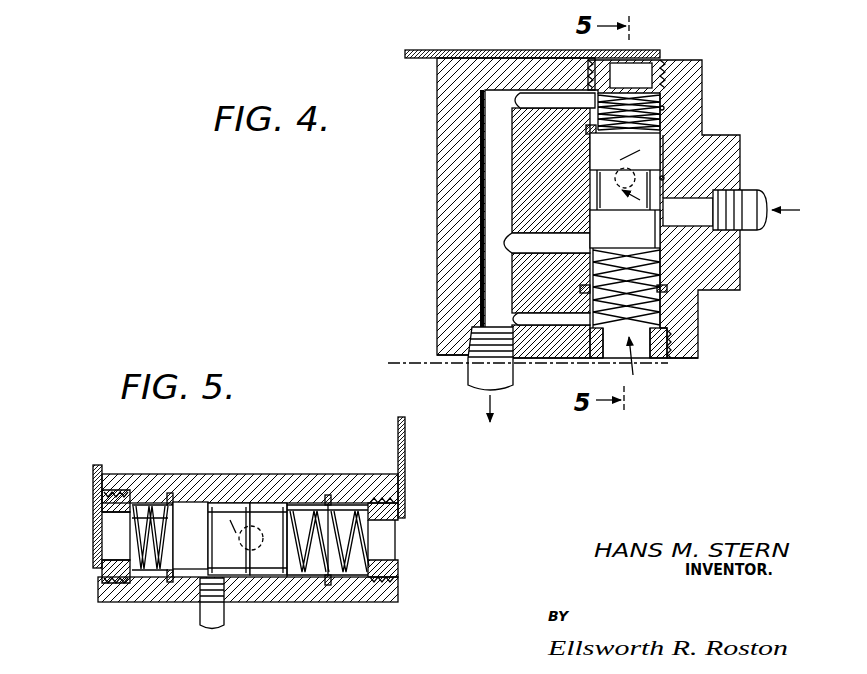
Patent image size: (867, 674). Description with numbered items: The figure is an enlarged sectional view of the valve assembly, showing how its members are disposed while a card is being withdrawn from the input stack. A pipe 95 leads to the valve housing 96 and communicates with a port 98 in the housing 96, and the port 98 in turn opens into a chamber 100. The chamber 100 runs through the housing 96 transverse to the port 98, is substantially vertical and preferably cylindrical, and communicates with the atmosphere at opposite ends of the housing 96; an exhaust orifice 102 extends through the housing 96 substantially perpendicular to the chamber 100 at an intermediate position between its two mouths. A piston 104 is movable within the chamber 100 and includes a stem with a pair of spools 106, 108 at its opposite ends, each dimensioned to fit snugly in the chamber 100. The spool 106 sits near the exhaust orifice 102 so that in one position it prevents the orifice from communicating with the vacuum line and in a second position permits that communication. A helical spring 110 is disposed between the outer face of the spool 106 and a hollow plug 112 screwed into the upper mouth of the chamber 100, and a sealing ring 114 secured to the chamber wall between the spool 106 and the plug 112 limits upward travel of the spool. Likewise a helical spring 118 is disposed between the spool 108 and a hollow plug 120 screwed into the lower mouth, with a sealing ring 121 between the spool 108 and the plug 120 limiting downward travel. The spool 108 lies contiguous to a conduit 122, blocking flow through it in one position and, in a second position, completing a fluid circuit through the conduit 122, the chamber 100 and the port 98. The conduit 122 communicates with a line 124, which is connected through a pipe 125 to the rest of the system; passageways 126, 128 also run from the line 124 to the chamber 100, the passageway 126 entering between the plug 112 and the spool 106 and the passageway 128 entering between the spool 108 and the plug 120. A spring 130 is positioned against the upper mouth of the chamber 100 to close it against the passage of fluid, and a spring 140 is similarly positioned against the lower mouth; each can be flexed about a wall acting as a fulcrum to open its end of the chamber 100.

In FIG. 4, the pipe 95 is at (764, 216).
In FIG. 4, the valve housing 96 is at (435, 173).
In FIG. 5, the valve housing 96 is at (305, 476).
In FIG. 4, the port 98 is at (700, 203).
In FIG. 5, the port 98 is at (251, 552).
In FIG. 4, the chamber 100 is at (664, 108).
In FIG. 4, the exhaust orifice 102 is at (640, 160).
In FIG. 5, the exhaust orifice 102 is at (195, 582).
In FIG. 4, the piston 104 is at (660, 218).
In FIG. 5, the piston 104 is at (240, 522).
In FIG. 4, the spool 106 is at (656, 135).
In FIG. 5, the spool 106 is at (190, 508).
In FIG. 4, the spool 108 is at (655, 238).
In FIG. 5, the spool 108 is at (272, 560).
In FIG. 4, the helical spring 110 is at (652, 97).
In FIG. 5, the helical spring 110 is at (142, 577).
In FIG. 4, the hollow plug 112 is at (665, 62).
In FIG. 5, the hollow plug 112 is at (102, 499).
In FIG. 4, the sealing ring 114 is at (586, 130).
In FIG. 5, the sealing ring 114 is at (170, 583).
In FIG. 4, the helical spring 118 is at (660, 315).
In FIG. 5, the helical spring 118 is at (368, 545).
In FIG. 4, the hollow plug 120 is at (657, 358).
In FIG. 5, the hollow plug 120 is at (396, 576).
In FIG. 4, the sealing ring 121 is at (690, 292).
In FIG. 5, the sealing ring 121 is at (330, 585).
In FIG. 4, the conduit 122 is at (512, 244).
In FIG. 4, the line 124 is at (497, 284).
In FIG. 4, the pipe 125 is at (470, 372).
In FIG. 4, the passageway 126 is at (536, 100).
In FIG. 4, the passageway 128 is at (556, 318).
In FIG. 4, the spring 130 is at (478, 50).
In FIG. 5, the spring 130 is at (93, 537).
In FIG. 4, the spring 140 is at (416, 360).
In FIG. 5, the spring 140 is at (398, 484).